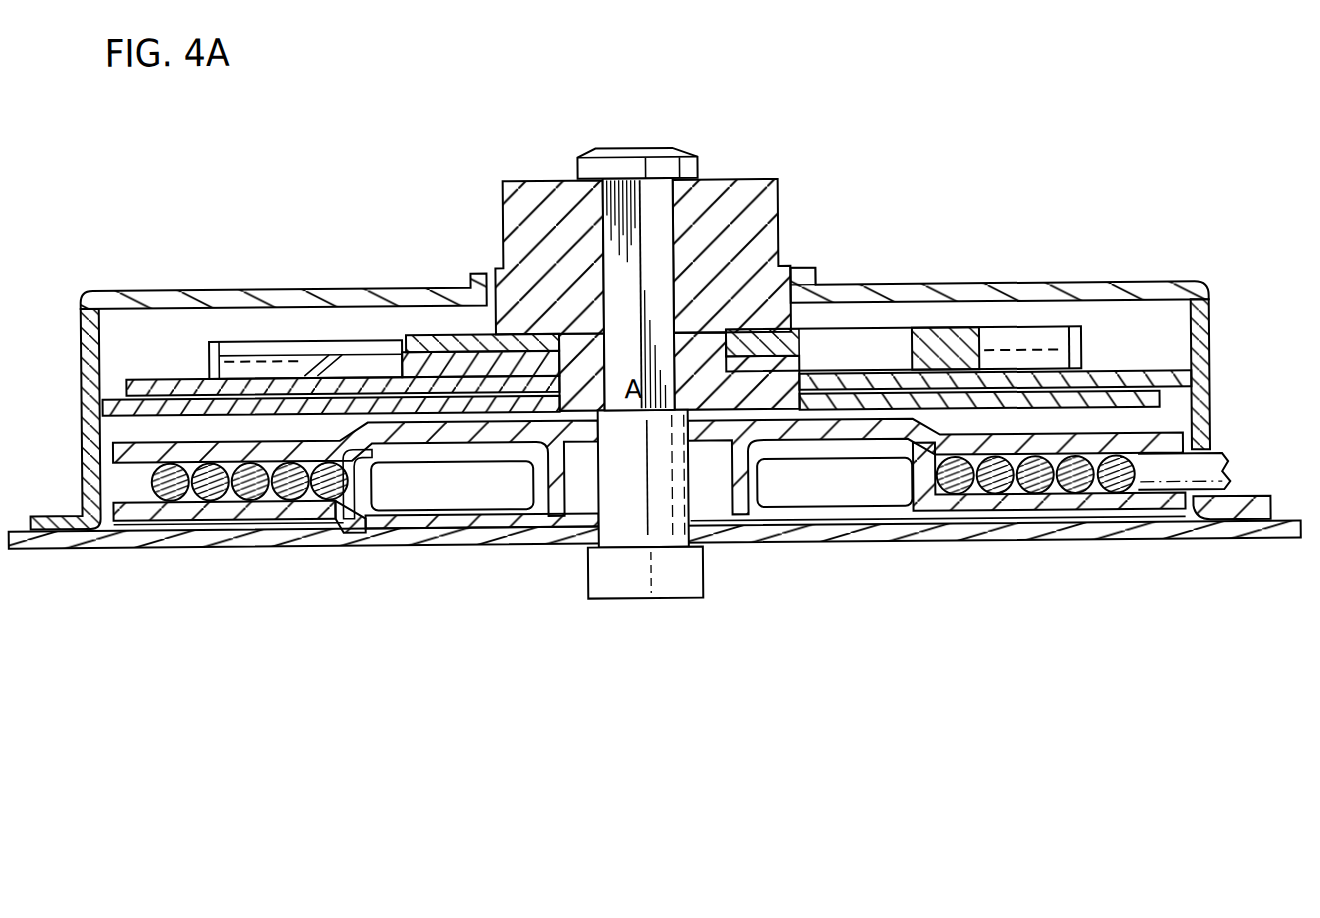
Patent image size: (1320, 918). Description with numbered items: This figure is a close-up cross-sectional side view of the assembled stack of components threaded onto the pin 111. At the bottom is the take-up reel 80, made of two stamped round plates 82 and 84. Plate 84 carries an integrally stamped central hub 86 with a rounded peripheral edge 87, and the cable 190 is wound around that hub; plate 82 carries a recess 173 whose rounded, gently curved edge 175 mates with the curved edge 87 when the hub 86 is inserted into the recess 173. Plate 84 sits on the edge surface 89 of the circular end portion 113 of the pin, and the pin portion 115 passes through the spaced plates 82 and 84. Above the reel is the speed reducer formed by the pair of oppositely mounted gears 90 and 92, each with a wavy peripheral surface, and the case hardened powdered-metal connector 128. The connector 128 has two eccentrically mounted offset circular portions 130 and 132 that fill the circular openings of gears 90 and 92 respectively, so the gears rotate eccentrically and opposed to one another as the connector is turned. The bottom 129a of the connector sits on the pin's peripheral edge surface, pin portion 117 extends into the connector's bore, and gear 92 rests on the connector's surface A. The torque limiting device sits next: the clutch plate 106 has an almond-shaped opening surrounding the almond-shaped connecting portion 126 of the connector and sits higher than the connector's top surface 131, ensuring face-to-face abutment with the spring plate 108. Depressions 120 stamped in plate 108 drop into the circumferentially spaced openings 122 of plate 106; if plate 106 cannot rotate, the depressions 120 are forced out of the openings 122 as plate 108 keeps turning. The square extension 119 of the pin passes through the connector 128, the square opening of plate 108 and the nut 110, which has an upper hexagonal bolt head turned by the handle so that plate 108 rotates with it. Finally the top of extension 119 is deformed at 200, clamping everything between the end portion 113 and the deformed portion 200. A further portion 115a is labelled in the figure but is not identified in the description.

The take-up reel 80 is at (108, 475).
The round plate 82 is at (123, 443).
The round plate 84 is at (263, 507).
The central hub 86 is at (370, 522).
The rounded peripheral edge 87 is at (447, 530).
The edge surface 89 is at (700, 547).
The gear 90 is at (88, 401).
The gear 92 is at (172, 380).
The clutch plate 106 is at (830, 336).
The spring plate 108 is at (975, 288).
The nut 110 is at (780, 211).
The pin 111 is at (662, 232).
The circular portion 113 is at (633, 578).
The pin portion 115 is at (533, 482).
The cylindrical channel 115a is at (757, 482).
The pin portion 117 is at (475, 345).
The square extension 119 is at (613, 207).
The depressions 120 is at (1082, 355).
The openings 122 is at (950, 362).
The connecting portion 126 is at (790, 296).
The connector 128 is at (575, 335).
The connector bottom 129a is at (362, 449).
The circular portion 130 is at (835, 378).
The top surface 131 is at (590, 338).
The circular portion 132 is at (460, 393).
The recess 173 is at (372, 432).
The curved edge 175 is at (340, 506).
The cable 190 is at (176, 489).
The deformed portion 200 is at (637, 148).